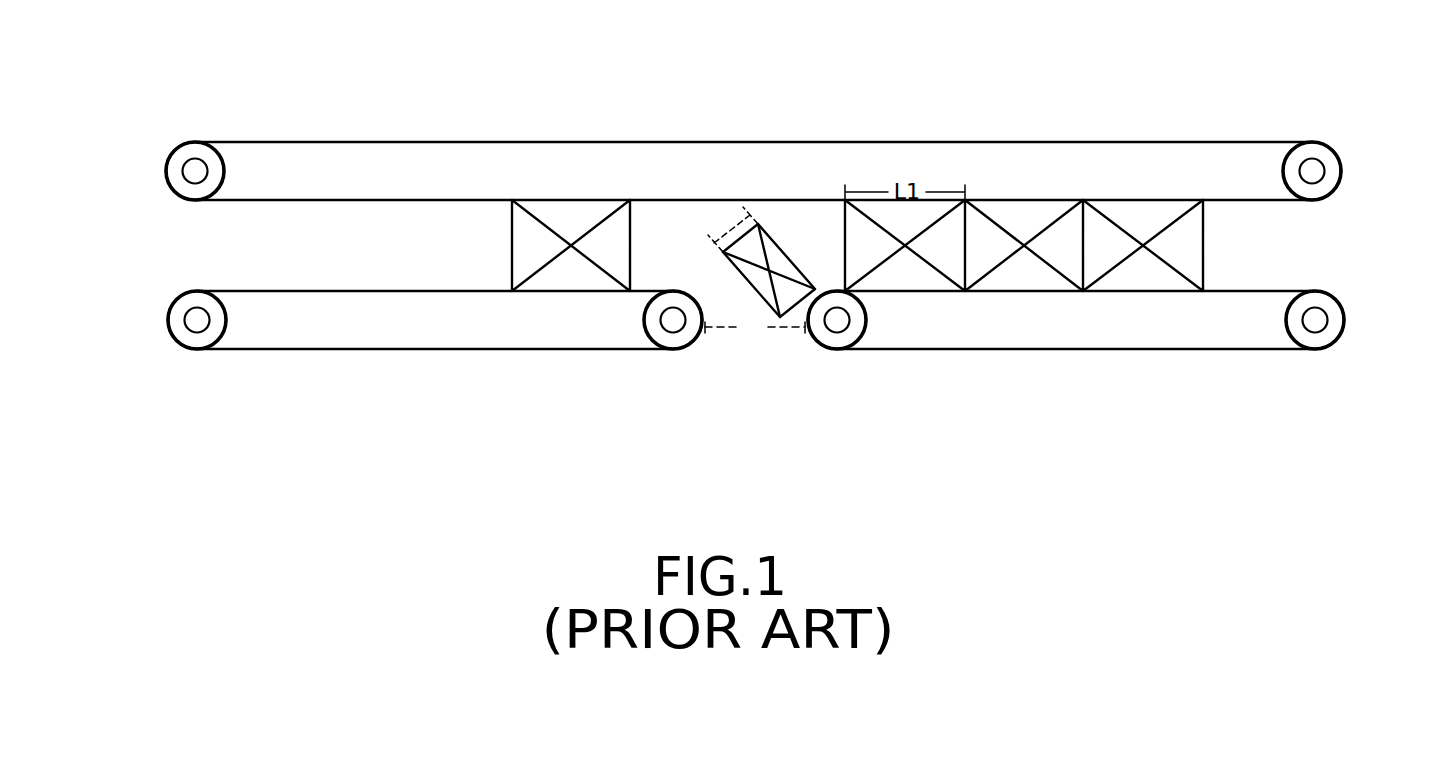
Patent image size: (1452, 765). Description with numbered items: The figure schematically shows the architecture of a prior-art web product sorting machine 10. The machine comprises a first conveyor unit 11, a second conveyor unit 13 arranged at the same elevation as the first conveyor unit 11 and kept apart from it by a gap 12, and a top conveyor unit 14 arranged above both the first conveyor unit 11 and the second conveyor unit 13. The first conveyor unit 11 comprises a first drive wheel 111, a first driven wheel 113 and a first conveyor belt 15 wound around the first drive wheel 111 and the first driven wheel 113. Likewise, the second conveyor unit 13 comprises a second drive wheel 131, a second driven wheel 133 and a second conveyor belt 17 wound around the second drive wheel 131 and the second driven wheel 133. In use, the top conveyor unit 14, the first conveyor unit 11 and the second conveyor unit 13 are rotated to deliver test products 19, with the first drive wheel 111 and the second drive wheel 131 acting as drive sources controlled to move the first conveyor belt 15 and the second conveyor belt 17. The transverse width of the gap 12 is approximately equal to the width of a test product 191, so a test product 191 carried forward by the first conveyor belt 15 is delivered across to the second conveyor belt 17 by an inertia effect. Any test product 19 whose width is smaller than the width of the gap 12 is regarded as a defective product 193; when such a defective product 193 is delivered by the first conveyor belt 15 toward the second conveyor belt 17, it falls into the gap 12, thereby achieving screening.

The web product sorting machine 10 is at (297, 77).
The first conveyor unit 11 is at (1122, 351).
The first drive wheel 111 is at (1317, 336).
The first driven wheel 113 is at (837, 336).
The gap 12 is at (750, 343).
The second conveyor unit 13 is at (393, 352).
The second drive wheel 131 is at (193, 336).
The second driven wheel 133 is at (673, 336).
The top conveyor unit 14 is at (1058, 140).
The first conveyor belt 15 is at (1052, 349).
The second conveyor belt 17 is at (372, 350).
The test products 19 is at (786, 192).
The test product 191 is at (865, 182).
The defective product 193 is at (765, 222).